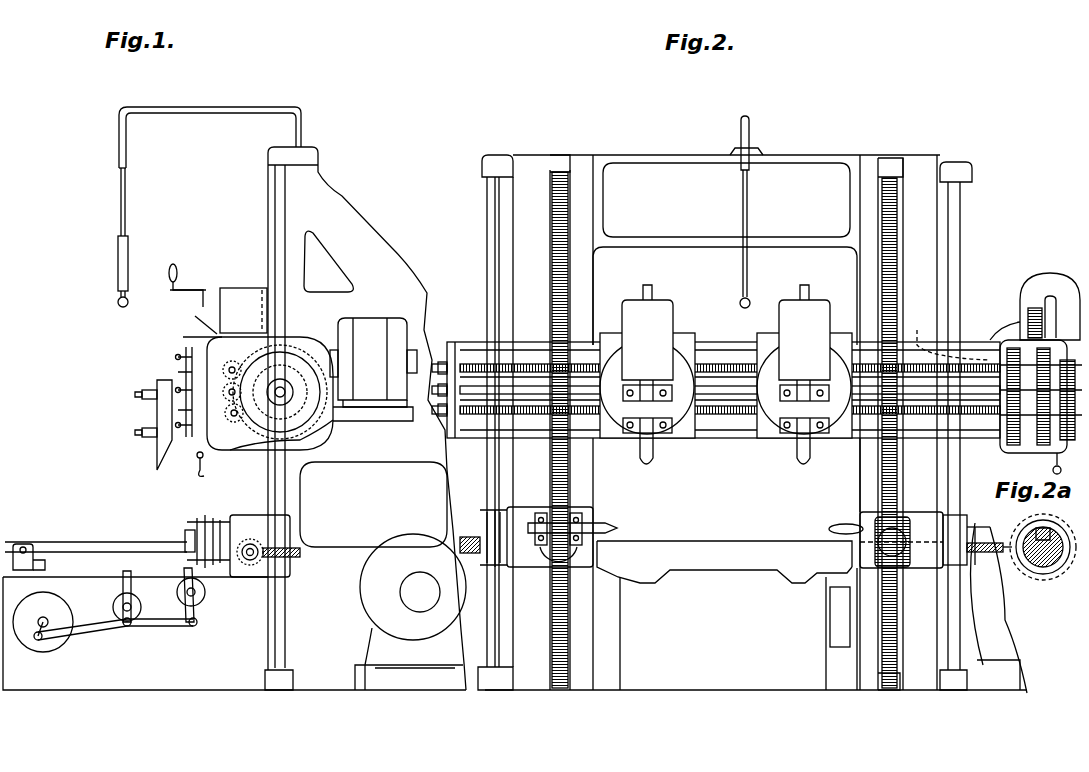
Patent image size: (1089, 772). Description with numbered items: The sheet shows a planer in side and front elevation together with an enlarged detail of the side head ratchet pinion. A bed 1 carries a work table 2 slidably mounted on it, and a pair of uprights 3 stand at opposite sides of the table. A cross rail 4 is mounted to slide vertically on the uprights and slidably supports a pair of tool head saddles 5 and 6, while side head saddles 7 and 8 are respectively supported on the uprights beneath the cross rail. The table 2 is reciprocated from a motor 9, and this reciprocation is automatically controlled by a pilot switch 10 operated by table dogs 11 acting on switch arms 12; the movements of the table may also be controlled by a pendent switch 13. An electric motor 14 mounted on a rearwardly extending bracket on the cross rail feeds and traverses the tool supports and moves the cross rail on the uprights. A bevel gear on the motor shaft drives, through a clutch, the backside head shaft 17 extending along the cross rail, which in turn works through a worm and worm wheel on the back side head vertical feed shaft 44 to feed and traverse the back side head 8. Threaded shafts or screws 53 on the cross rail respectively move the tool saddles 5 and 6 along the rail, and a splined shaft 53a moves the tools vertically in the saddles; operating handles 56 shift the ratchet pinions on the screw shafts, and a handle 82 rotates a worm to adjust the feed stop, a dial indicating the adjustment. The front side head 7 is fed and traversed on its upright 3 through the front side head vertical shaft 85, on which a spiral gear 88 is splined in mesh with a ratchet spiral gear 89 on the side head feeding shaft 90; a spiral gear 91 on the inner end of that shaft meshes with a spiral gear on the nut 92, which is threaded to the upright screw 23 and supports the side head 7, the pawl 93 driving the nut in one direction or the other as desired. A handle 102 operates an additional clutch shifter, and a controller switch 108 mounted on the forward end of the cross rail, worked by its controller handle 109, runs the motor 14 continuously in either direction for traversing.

In FIG. 1, the bed 1 is at (194, 688).
In FIG. 2, the bed 1 is at (740, 688).
In FIG. 1, the work table 2 is at (100, 541).
In FIG. 2, the work table 2 is at (765, 541).
In FIG. 1, the uprights 3 is at (382, 238).
In FIG. 2, the uprights 3 is at (920, 218).
In FIG. 2, the cross rail 4 is at (722, 342).
In FIG. 2, the tool head saddle 5 is at (680, 440).
In FIG. 2, the tool head saddle 6 is at (765, 440).
In FIG. 1, the front side head saddle 7 is at (250, 515).
In FIG. 2, the front side head saddle 7 is at (862, 514).
In FIG. 2, the back side head saddle 8 is at (588, 512).
In FIG. 1, the motor 9 is at (362, 592).
In FIG. 2, the motor 9 is at (1010, 650).
In FIG. 1, the pilot switch 10 is at (52, 645).
In FIG. 1, the table dogs 11 is at (40, 558).
In FIG. 1, the switch arms 12 is at (186, 570).
In FIG. 1, the pendent switch 13 is at (118, 258).
In FIG. 2, the pendent switch 13 is at (740, 262).
In FIG. 1, the electric motor 14 is at (408, 330).
In FIG. 2, the electric motor 14 is at (975, 328).
In FIG. 2, the backside head shaft 17 is at (947, 338).
In FIG. 2, the upright screw 23 is at (552, 185).
In FIG. 2, the back side head vertical feed shaft 44 is at (488, 260).
In FIG. 2, the threaded shafts or screws 53 is at (440, 388).
In FIG. 2, the splined shaft 53a is at (445, 416).
In FIG. 1, the operating handles 56 is at (160, 428).
In FIG. 1, the handle 82 is at (199, 470).
In FIG. 1, the front side head vertical shaft 85 is at (287, 660).
In FIG. 2, the front side head vertical shaft 85 is at (963, 259).
In FIG. 1, the spiral gear 88 is at (300, 552).
In FIG. 1, the ratchet spiral gear 89 is at (250, 566).
In FIG. 2, the ratchet spiral gear 89 is at (948, 572).
In FIG. 2A, the ratchet spiral gear 89 is at (1048, 578).
In FIG. 1, the side head feeding shaft 90 is at (257, 547).
In FIG. 2A, the side head feeding shaft 90 is at (1030, 540).
In FIG. 2, the spiral gear 91 is at (830, 528).
In FIG. 2, the nut 92 is at (905, 520).
In FIG. 2A, the pawl 93 is at (1052, 532).
In FIG. 1, the handle 102 is at (180, 374).
In FIG. 1, the controller switch 108 is at (240, 288).
In FIG. 2, the controller switch 108 is at (1040, 275).
In FIG. 1, the controller handle 109 is at (190, 345).